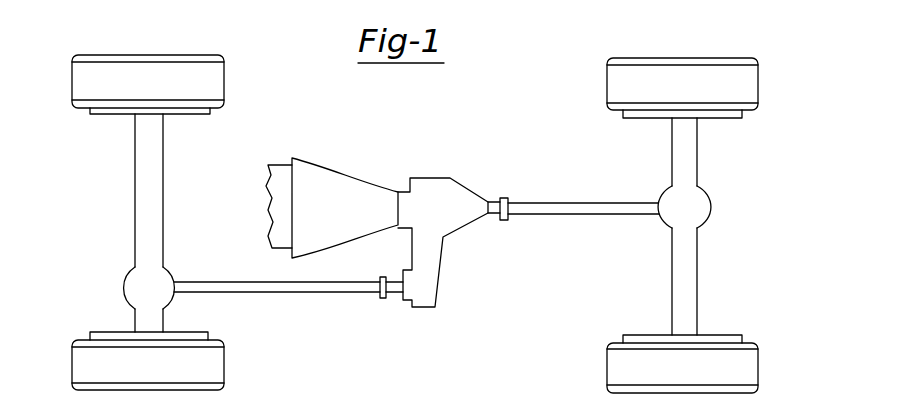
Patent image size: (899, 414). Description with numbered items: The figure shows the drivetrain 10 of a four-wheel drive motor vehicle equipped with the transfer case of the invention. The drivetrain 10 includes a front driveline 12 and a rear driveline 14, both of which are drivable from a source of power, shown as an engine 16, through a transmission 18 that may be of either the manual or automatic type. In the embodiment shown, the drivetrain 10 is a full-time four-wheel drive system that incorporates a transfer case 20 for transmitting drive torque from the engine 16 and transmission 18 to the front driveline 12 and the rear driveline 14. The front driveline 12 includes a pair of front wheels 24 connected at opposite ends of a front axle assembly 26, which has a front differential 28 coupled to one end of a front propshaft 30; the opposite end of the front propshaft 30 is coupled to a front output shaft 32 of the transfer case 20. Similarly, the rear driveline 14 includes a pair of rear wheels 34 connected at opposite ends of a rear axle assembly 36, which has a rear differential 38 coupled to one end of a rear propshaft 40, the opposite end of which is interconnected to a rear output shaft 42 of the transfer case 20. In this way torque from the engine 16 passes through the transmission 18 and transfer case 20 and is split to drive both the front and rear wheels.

The drivetrain 10 is at (476, 108).
The front driveline 12 is at (180, 214).
The rear driveline 14 is at (618, 182).
The engine 16 is at (277, 190).
The transmission 18 is at (352, 220).
The transfer case 20 is at (468, 232).
The front wheels 24 is at (108, 80).
The front axle assembly 26 is at (146, 159).
The front differential 28 is at (137, 275).
The front propshaft 30 is at (353, 291).
The front output shaft 32 is at (395, 290).
The rear wheels 34 is at (650, 92).
The rear axle assembly 36 is at (684, 145).
The rear differential 38 is at (693, 205).
The rear propshaft 40 is at (618, 215).
The rear output shaft 42 is at (493, 200).